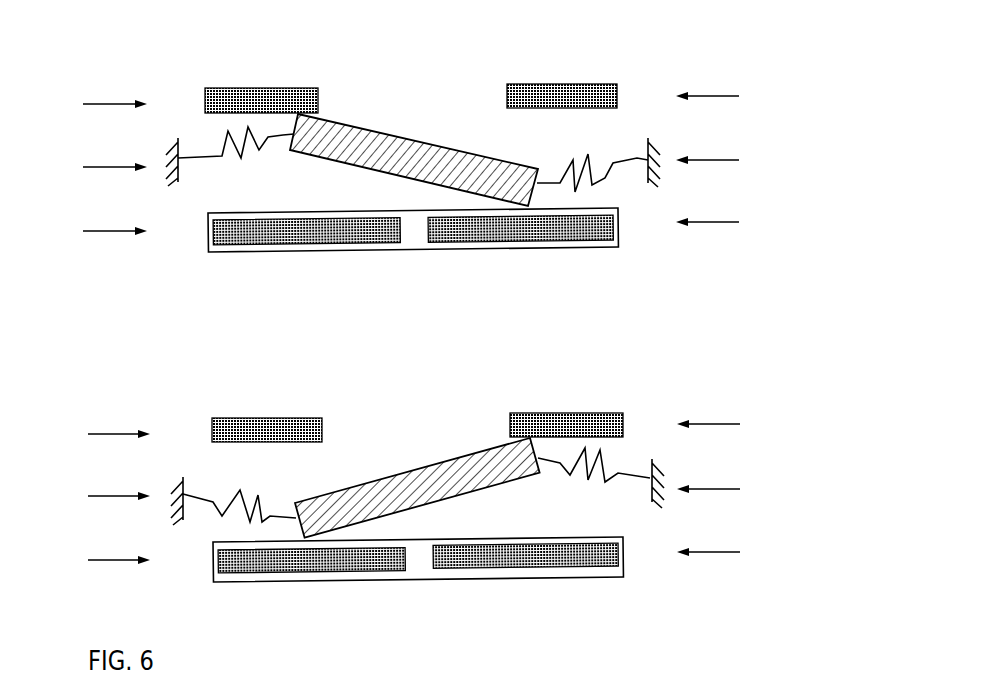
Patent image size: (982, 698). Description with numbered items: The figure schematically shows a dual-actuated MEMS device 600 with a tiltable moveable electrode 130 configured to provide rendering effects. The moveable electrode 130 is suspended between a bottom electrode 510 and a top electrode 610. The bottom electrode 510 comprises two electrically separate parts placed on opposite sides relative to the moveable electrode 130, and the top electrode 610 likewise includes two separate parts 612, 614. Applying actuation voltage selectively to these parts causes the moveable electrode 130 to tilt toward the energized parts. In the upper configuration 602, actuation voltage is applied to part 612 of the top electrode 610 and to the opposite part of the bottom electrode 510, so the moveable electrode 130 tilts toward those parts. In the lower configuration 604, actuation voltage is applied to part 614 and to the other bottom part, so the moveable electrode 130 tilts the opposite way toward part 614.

The MEMS device 600 is at (435, 49).
The tilt state toward parts 612 and 514 602 is at (781, 126).
The tilt state toward parts 614 and 512 604 is at (793, 476).
The top electrode 610 is at (620, 92).
The part of top electrode 612 is at (215, 86).
The part of top electrode 614 is at (604, 84).
The moveable electrode 130 is at (378, 137).
The bottom electrode 510 is at (450, 428).